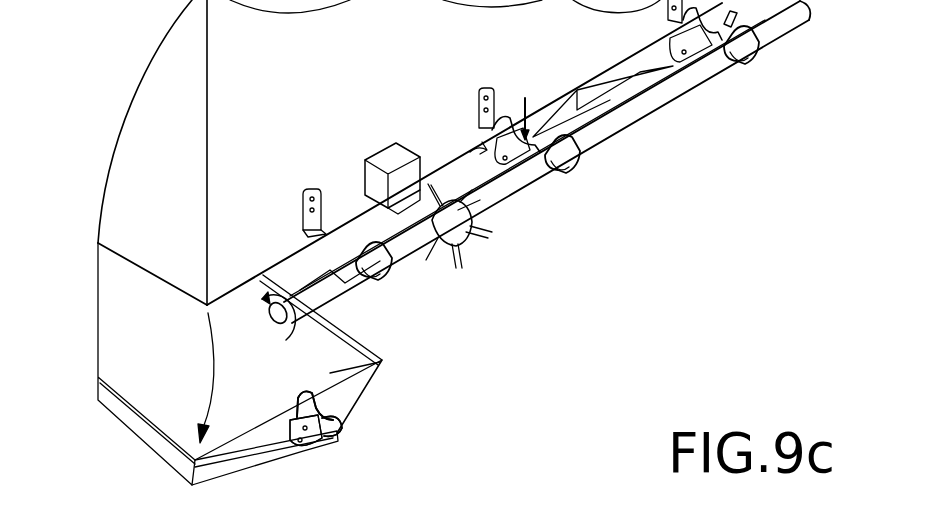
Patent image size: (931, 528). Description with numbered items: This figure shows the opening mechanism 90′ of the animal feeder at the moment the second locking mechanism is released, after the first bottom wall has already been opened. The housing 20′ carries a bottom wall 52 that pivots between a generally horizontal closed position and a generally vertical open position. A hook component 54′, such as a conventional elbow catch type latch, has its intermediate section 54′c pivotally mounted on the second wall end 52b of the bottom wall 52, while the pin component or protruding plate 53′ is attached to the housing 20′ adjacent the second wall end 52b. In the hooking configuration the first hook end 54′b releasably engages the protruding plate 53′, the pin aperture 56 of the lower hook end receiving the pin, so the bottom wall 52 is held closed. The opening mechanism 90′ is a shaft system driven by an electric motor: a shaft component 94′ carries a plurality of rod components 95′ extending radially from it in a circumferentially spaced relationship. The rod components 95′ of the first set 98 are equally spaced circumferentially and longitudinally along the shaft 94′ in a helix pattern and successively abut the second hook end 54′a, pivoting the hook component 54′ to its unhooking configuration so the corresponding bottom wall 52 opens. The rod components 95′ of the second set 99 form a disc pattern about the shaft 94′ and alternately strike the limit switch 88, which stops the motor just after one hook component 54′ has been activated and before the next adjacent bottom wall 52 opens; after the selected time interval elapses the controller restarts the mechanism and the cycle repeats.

The housing 20′ is at (287, 80).
The bottom wall 52 is at (179, 375).
The second wall end 52b is at (265, 452).
The pin aperture 56 is at (278, 412).
The hook component 54′ is at (370, 359).
The second hook end 54′a is at (330, 432).
The first hook end 54′b is at (308, 396).
The intermediate section 54′c is at (333, 420).
The pin component 53′ is at (304, 190).
The limit switch 88 is at (392, 150).
The opening mechanism 90′ is at (728, 222).
The shaft component 94′ is at (686, 88).
The rod components 95′ is at (547, 110).
The first set 98 is at (752, 117).
The second set 99 is at (503, 285).